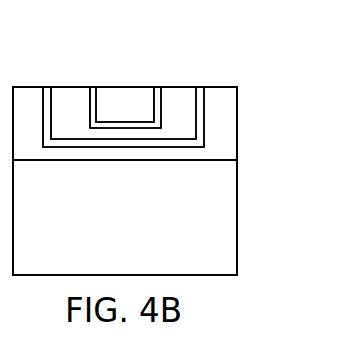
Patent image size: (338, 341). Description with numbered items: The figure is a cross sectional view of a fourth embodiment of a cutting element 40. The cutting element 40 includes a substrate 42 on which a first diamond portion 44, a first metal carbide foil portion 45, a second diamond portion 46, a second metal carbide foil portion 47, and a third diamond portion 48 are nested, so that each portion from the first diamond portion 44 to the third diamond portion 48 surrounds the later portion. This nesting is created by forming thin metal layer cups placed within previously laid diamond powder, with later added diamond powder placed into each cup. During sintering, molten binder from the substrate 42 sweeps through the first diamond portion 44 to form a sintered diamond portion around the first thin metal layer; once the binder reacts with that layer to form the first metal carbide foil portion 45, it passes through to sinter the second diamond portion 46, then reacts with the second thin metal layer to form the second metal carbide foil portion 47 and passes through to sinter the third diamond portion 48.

The cutting element 40 is at (270, 57).
The substrate 42 is at (215, 217).
The first diamond portion 44 is at (223, 133).
The first metal carbide foil portion 45 is at (202, 97).
The second diamond portion 46 is at (181, 102).
The second metal carbide foil portion 47 is at (92, 97).
The third diamond portion 48 is at (128, 100).